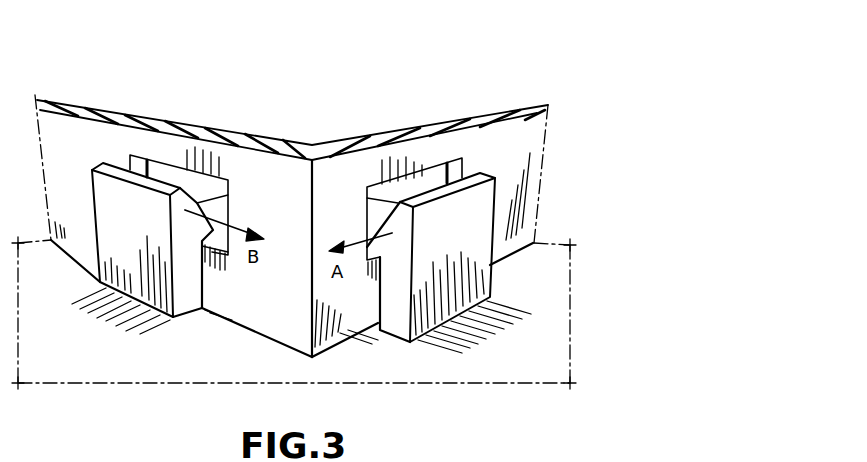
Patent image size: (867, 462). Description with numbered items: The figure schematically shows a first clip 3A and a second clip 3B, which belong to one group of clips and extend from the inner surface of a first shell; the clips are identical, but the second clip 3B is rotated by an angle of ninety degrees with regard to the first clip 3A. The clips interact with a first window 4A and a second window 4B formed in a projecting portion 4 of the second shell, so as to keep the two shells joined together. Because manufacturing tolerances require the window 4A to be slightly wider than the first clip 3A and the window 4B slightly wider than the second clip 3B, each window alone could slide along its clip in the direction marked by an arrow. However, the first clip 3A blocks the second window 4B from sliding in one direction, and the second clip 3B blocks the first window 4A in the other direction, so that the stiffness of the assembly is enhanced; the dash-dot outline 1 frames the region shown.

The base 1 is at (473, 357).
The projecting portion 4 is at (517, 120).
The first window 4A is at (168, 170).
The second window 4B is at (428, 180).
The first clip 3A is at (150, 213).
The second clip 3B is at (460, 225).